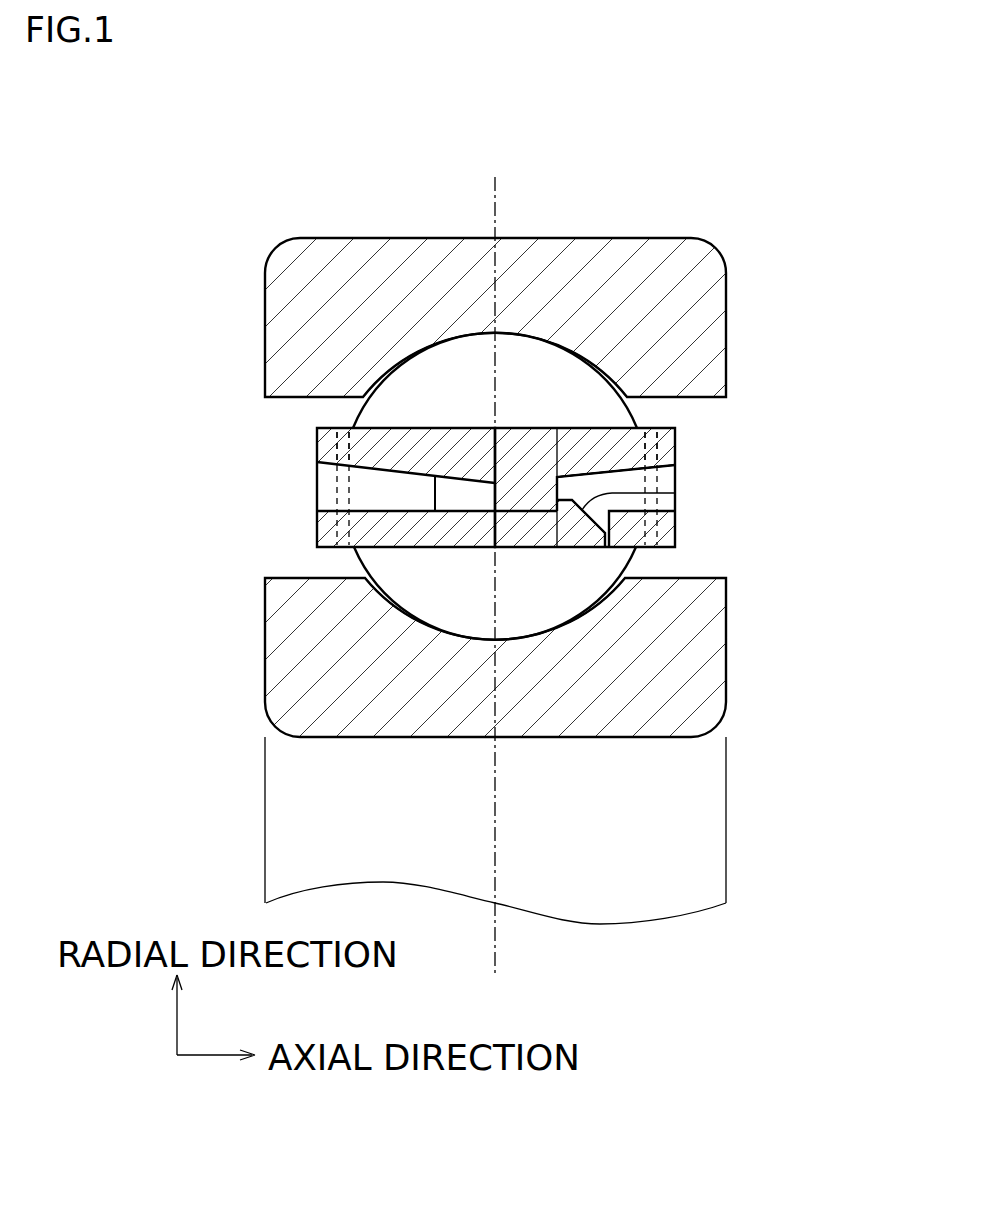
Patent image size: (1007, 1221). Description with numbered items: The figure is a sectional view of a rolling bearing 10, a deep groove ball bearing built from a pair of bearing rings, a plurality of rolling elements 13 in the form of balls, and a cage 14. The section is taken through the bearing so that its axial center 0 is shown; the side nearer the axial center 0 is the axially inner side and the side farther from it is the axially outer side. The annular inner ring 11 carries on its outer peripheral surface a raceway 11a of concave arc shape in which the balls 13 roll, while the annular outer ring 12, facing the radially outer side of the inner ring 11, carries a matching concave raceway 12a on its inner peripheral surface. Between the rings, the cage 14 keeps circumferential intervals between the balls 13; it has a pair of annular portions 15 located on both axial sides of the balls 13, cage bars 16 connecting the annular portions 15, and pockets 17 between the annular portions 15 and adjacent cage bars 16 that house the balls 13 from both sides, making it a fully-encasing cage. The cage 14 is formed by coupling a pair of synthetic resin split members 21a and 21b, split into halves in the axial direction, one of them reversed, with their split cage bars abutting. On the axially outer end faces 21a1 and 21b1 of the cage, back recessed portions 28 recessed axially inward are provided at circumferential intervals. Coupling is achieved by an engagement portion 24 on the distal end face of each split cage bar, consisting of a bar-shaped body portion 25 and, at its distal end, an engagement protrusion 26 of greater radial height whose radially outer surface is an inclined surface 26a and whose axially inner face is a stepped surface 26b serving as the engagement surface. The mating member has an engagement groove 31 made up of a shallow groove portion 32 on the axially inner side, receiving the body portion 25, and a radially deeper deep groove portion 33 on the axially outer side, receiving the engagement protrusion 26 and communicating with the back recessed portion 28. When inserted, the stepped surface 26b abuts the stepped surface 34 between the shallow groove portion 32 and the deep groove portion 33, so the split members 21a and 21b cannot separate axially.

The rolling bearing 10 is at (709, 157).
The axial center 0 is at (494, 214).
The inner ring 11 is at (710, 640).
The raceway 11a is at (493, 640).
The outer ring 12 is at (707, 315).
The raceway 12a is at (500, 345).
The rolling element 13 is at (537, 613).
The cage 14 is at (680, 397).
The annular portion 15 is at (328, 440).
The cage bar 16 is at (408, 422).
The pocket 17 is at (317, 503).
The split member 21a is at (316, 450).
The axially outer end face 21a1 is at (317, 530).
The split member 21b is at (660, 528).
The axially outer end face 21b1 is at (675, 437).
The engagement portion 24 is at (577, 548).
The body portion 25 is at (497, 556).
The engagement protrusion 26 is at (593, 548).
The inclined surface 26a is at (675, 493).
The stepped surface 26b is at (555, 500).
The back recessed portion 28 is at (322, 486).
The engagement groove 31 is at (523, 548).
The shallow groove portion 32 is at (545, 549).
The deep groove portion 33 is at (652, 422).
The stepped surface 34 is at (588, 494).